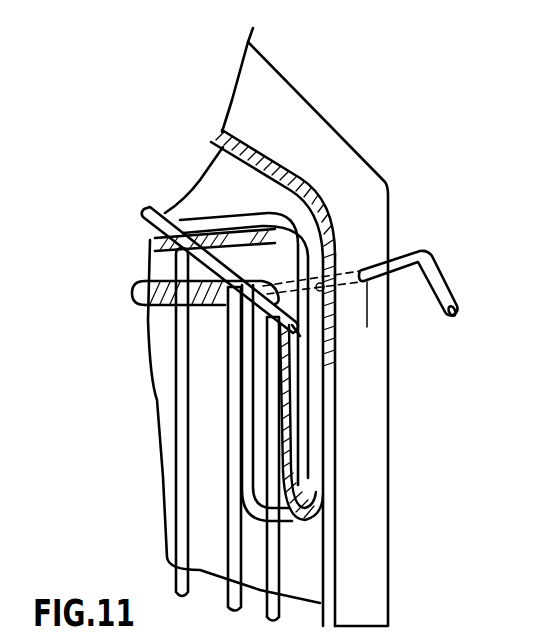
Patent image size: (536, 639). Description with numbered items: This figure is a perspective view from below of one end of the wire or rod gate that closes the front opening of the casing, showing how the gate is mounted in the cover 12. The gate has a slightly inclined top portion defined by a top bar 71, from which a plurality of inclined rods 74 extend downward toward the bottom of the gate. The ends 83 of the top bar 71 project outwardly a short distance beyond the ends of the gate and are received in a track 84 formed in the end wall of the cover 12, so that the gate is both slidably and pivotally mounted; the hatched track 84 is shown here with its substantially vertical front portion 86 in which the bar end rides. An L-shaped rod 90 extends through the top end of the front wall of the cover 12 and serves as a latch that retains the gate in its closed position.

The cover 12 is at (388, 210).
The top bar 71 is at (146, 212).
The inclined rods 74 is at (228, 433).
The ends of the gate top bar 83 is at (293, 322).
The track 84 is at (280, 183).
The front portion 86 is at (303, 408).
The L-shaped rod 90 is at (433, 258).